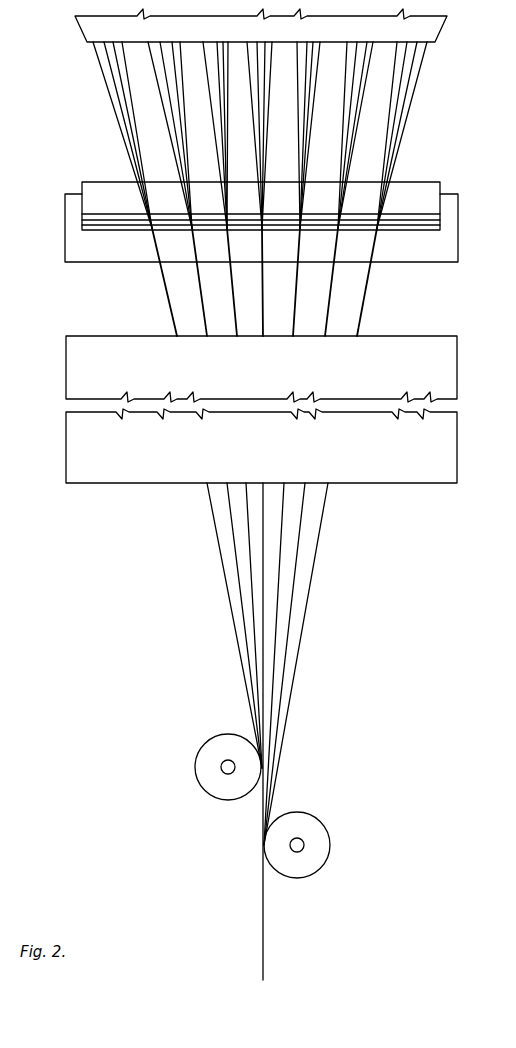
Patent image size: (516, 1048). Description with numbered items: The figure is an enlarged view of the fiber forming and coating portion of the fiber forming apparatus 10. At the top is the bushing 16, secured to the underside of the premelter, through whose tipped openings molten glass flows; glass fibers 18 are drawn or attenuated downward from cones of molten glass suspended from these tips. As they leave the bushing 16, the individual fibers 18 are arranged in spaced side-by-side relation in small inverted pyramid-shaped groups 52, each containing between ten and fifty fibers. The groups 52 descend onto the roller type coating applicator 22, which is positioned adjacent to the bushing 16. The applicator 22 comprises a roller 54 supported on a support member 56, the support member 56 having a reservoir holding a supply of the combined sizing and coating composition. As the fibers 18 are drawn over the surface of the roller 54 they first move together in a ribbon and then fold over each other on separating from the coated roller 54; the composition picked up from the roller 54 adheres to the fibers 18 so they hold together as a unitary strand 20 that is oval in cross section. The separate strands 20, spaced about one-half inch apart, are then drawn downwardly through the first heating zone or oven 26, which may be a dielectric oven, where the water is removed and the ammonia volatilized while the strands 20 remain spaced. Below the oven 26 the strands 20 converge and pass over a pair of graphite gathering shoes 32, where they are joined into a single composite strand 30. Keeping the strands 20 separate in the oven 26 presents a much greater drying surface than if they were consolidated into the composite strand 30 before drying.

The fiber forming apparatus 10 is at (74, 50).
The bushing 16 is at (440, 28).
The glass fibers 18 is at (427, 53).
The strands of fibers 20 is at (332, 287).
The roller type coating applicator 22 is at (440, 173).
The first heating zone or oven 26 is at (458, 352).
The composite strand 30 is at (264, 910).
The graphite gathering shoes 32 is at (195, 762).
The inverted pyramid-shaped groups 52 is at (408, 134).
The roller 54 is at (433, 188).
The support member 56 is at (458, 220).